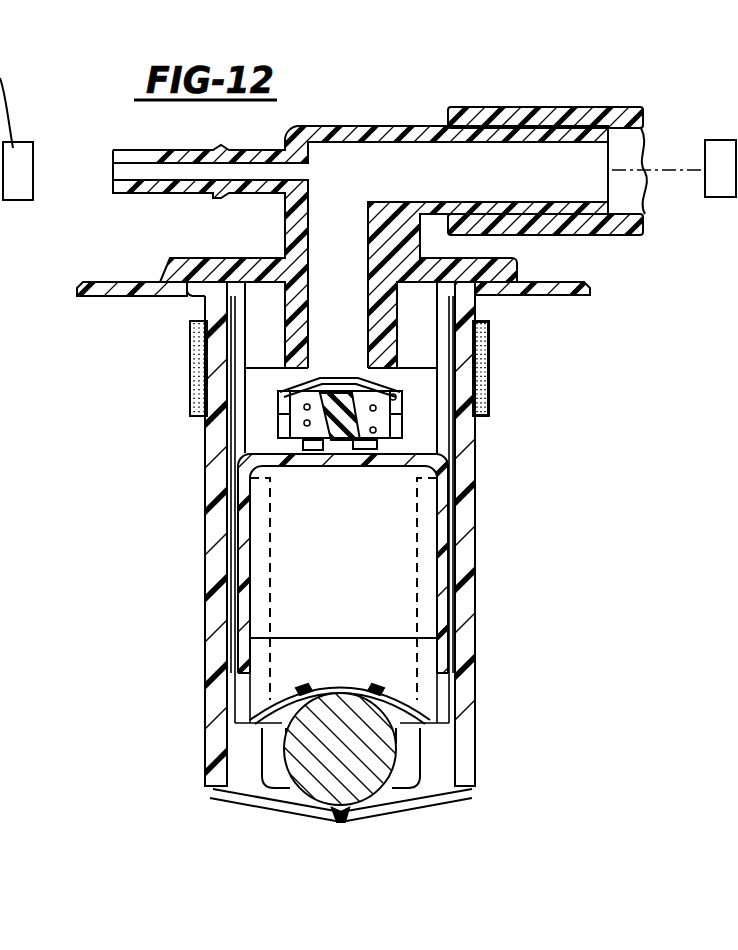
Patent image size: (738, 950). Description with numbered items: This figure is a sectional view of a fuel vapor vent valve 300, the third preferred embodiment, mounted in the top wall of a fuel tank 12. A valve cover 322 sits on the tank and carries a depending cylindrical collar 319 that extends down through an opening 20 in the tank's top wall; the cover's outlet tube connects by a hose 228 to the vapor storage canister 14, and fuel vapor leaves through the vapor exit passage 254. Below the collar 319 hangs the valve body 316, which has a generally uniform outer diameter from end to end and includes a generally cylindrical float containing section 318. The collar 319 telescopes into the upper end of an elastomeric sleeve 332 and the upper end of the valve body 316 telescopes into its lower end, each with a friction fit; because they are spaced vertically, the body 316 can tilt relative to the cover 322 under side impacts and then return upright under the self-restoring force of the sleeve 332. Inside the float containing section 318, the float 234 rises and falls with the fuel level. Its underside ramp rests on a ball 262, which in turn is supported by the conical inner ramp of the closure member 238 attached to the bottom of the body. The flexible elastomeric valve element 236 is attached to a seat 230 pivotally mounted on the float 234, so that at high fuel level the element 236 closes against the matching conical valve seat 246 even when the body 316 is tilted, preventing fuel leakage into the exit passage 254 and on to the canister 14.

The fuel vapor vent valve 300 is at (318, 110).
The valve cover 322 is at (357, 126).
The vapor exit passage 254 is at (466, 184).
The hose 228 is at (586, 108).
The vapor storage canister 14 is at (722, 188).
The fuel tank 12 is at (96, 290).
The opening 20 is at (203, 298).
The valve body 316 is at (478, 455).
The float containing section 318 is at (465, 527).
The collar 319 is at (466, 331).
The elastomeric sleeve 332 is at (488, 365).
The valve seat 246 is at (245, 368).
The valve element 236 is at (279, 393).
The seat 230 is at (279, 436).
The float 234 is at (446, 562).
The ball 262 is at (387, 739).
The closure member 238 is at (346, 818).